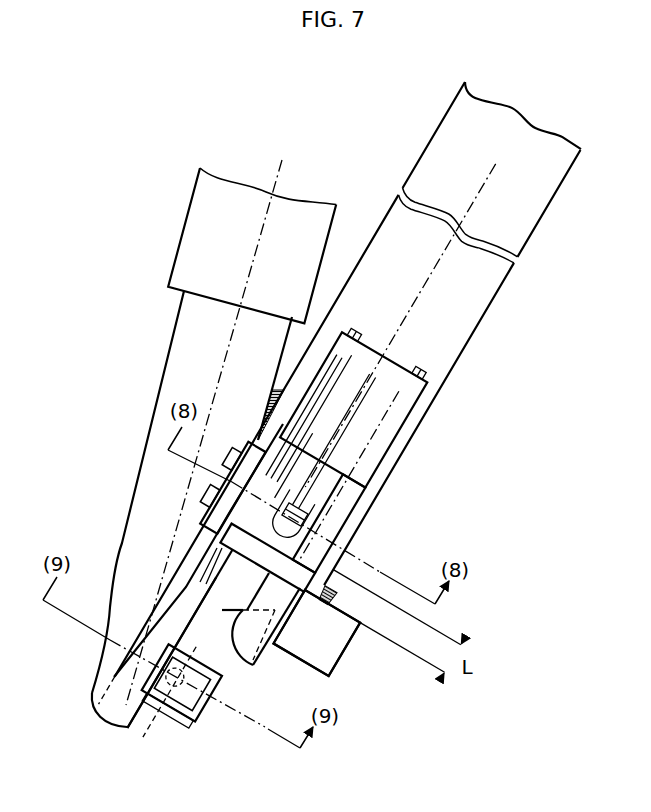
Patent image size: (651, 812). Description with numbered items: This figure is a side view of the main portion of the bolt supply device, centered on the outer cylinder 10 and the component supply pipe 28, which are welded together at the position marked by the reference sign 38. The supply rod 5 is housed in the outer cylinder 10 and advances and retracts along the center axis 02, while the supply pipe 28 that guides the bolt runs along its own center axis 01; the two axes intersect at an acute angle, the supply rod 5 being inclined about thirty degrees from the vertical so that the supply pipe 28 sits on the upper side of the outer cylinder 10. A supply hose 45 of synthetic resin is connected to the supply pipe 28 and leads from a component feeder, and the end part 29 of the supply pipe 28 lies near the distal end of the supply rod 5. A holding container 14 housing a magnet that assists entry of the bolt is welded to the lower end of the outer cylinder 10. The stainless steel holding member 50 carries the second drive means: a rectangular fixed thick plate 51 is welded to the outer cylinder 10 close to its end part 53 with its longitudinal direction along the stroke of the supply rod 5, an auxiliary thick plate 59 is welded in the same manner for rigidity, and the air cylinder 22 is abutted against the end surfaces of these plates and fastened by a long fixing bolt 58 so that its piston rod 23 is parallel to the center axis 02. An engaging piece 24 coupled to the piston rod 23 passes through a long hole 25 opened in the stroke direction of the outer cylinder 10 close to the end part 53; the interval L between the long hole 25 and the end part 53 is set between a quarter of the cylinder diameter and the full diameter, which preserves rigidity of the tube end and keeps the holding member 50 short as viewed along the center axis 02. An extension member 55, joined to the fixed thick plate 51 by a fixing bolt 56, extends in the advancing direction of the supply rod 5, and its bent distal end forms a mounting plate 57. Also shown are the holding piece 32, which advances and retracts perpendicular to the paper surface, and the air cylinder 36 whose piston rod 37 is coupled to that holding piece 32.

The center axis of the supply pipe 01 is at (207, 420).
The center axis of the supply rod and outer cylinder 02 is at (406, 315).
The supply rod 5 is at (270, 658).
The outer cylinder 10 is at (498, 296).
The holding container 14 is at (344, 653).
The air cylinder 22 is at (416, 412).
The piston rod 23 is at (340, 500).
The engaging piece 24 is at (328, 562).
The long hole 25 is at (298, 509).
The component supply pipe 28 is at (192, 492).
The end part of the component supply pipe 29 is at (98, 670).
The holding piece 32 is at (148, 712).
The air cylinder 36 is at (204, 708).
The piston rod 37 is at (214, 683).
The welded position 38 is at (279, 389).
The supply hose 45 is at (185, 222).
The holding member 50 is at (160, 576).
The fixed thick plate 51 is at (293, 448).
The end part of the outer cylinder 53 is at (317, 633).
The extension member 55 is at (200, 560).
The fixing bolt 56 is at (241, 452).
The mounting plate 57 is at (182, 723).
The long fixing bolt 58 is at (354, 325).
The auxiliary thick plate 59 is at (330, 550).